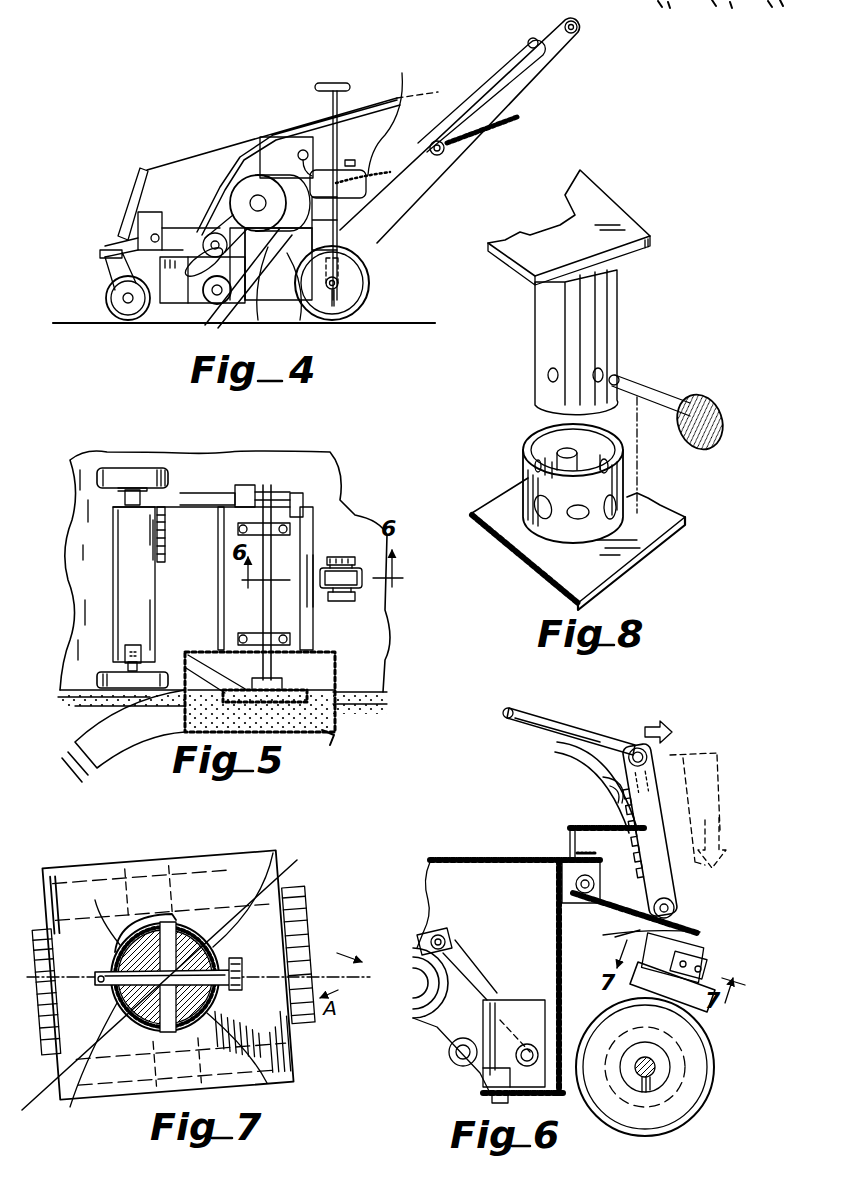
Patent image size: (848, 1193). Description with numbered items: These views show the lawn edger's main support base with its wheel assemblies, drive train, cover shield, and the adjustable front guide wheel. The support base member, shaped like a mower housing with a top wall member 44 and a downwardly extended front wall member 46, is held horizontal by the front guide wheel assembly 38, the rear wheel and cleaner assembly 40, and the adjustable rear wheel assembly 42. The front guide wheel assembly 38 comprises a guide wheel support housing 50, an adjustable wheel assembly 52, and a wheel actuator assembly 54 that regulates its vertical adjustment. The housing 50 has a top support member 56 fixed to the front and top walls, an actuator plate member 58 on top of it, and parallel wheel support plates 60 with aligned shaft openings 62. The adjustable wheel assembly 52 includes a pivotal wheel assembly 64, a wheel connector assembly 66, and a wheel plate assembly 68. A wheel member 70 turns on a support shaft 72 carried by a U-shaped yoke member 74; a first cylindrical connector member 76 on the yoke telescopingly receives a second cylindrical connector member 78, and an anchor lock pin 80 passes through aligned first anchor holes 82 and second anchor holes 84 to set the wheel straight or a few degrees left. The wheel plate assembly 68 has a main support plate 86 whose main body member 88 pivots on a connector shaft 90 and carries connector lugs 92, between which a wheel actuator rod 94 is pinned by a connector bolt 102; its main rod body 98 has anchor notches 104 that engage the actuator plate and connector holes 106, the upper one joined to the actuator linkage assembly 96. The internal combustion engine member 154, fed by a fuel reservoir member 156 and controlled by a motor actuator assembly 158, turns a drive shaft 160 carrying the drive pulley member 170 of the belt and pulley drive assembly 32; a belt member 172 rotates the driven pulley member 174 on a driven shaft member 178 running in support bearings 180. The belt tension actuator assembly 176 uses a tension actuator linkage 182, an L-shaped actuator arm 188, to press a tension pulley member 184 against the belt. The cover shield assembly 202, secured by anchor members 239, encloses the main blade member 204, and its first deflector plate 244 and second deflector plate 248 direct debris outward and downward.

In FIG. 4, the belt and pulley drive assembly 32 is at (192, 199).
In FIG. 5, the front guide wheel assembly 38 is at (343, 552).
In FIG. 6, the front guide wheel assembly 38 is at (706, 965).
In FIG. 5, the rear wheel and cleaner assembly 40 is at (106, 667).
In FIG. 4, the adjustable rear wheel assembly 42 is at (371, 281).
In FIG. 5, the adjustable rear wheel assembly 42 is at (181, 476).
In FIG. 6, the top wall member 44 is at (470, 853).
In FIG. 6, the front wall member 46 is at (553, 958).
In FIG. 6, the guide wheel support housing 50 is at (568, 808).
In FIG. 8, the adjustable wheel assembly 52 is at (661, 368).
In FIG. 6, the adjustable wheel assembly 52 is at (736, 895).
In FIG. 6, the wheel actuator assembly 54 is at (578, 716).
In FIG. 6, the top support member 56 is at (445, 858).
In FIG. 6, the actuator plate member 58 is at (603, 800).
In FIG. 6, the wheel support plates 60 is at (572, 870).
In FIG. 6, the shaft openings 62 is at (575, 823).
In FIG. 6, the pivotal wheel assembly 64 is at (713, 1012).
In FIG. 8, the wheel connector assembly 66 is at (529, 408).
In FIG. 7, the wheel connector assembly 66 is at (222, 922).
In FIG. 6, the wheel connector assembly 66 is at (648, 990).
In FIG. 8, the wheel plate assembly 68 is at (515, 293).
In FIG. 6, the wheel plate assembly 68 is at (572, 908).
In FIG. 7, the wheel member 70 is at (297, 920).
In FIG. 6, the wheel member 70 is at (692, 1090).
In FIG. 7, the support shaft 72 is at (153, 855).
In FIG. 6, the support shaft 72 is at (640, 1078).
In FIG. 8, the U-shaped yoke member 74 is at (577, 563).
In FIG. 7, the U-shaped yoke member 74 is at (77, 887).
In FIG. 6, the U-shaped yoke member 74 is at (600, 1020).
In FIG. 8, the first cylindrical connector member 76 is at (522, 480).
In FIG. 7, the first cylindrical connector member 76 is at (282, 1088).
In FIG. 8, the second cylindrical connector member 78 is at (603, 310).
In FIG. 7, the second cylindrical connector member 78 is at (63, 1088).
In FIG. 8, the anchor lock pin 80 is at (672, 394).
In FIG. 7, the anchor lock pin 80 is at (242, 967).
In FIG. 8, the first anchor holes 82 is at (548, 535).
In FIG. 7, the first anchor holes 82 is at (120, 952).
In FIG. 8, the second anchor holes 84 is at (594, 382).
In FIG. 7, the second anchor holes 84 is at (70, 1122).
In FIG. 8, the main support plate 86 is at (613, 212).
In FIG. 6, the main support plate 86 is at (590, 903).
In FIG. 6, the main body member 88 is at (645, 933).
In FIG. 6, the connector shaft 90 is at (580, 884).
In FIG. 6, the connector lugs 92 is at (675, 897).
In FIG. 6, the wheel actuator rod 94 is at (676, 762).
In FIG. 6, the actuator linkage assembly 96 is at (527, 720).
In FIG. 6, the main rod body 98 is at (663, 840).
In FIG. 6, the connector bolt 102 is at (638, 748).
In FIG. 6, the anchor notches 104 is at (562, 752).
In FIG. 6, the connector holes 106 is at (655, 753).
In FIG. 4, the internal combustion engine member 154 is at (270, 180).
In FIG. 4, the fuel reservoir member 156 is at (404, 72).
In FIG. 4, the motor actuator assembly 158 is at (402, 148).
In FIG. 4, the drive shaft 160 is at (260, 205).
In FIG. 4, the drive pulley member 170 is at (238, 188).
In FIG. 4, the belt member 172 is at (298, 308).
In FIG. 4, the driven pulley member 174 is at (197, 300).
In FIG. 4, the belt tension actuator assembly 176 is at (181, 248).
In FIG. 4, the driven shaft member 178 is at (206, 303).
In FIG. 5, the driven shaft member 178 is at (265, 547).
In FIG. 5, the support bearings 180 is at (267, 498).
In FIG. 6, the support bearings 180 is at (470, 1070).
In FIG. 4, the tension actuator linkage 182 is at (103, 266).
In FIG. 4, the tension pulley member 184 is at (187, 297).
In FIG. 4, the L-shaped actuator arm 188 is at (232, 148).
In FIG. 5, the cover shield assembly 202 is at (300, 741).
In FIG. 5, the main blade member 204 is at (340, 722).
In FIG. 5, the anchor members 239 is at (323, 733).
In FIG. 5, the first deflector plate 244 is at (200, 665).
In FIG. 5, the second deflector plate 248 is at (118, 725).